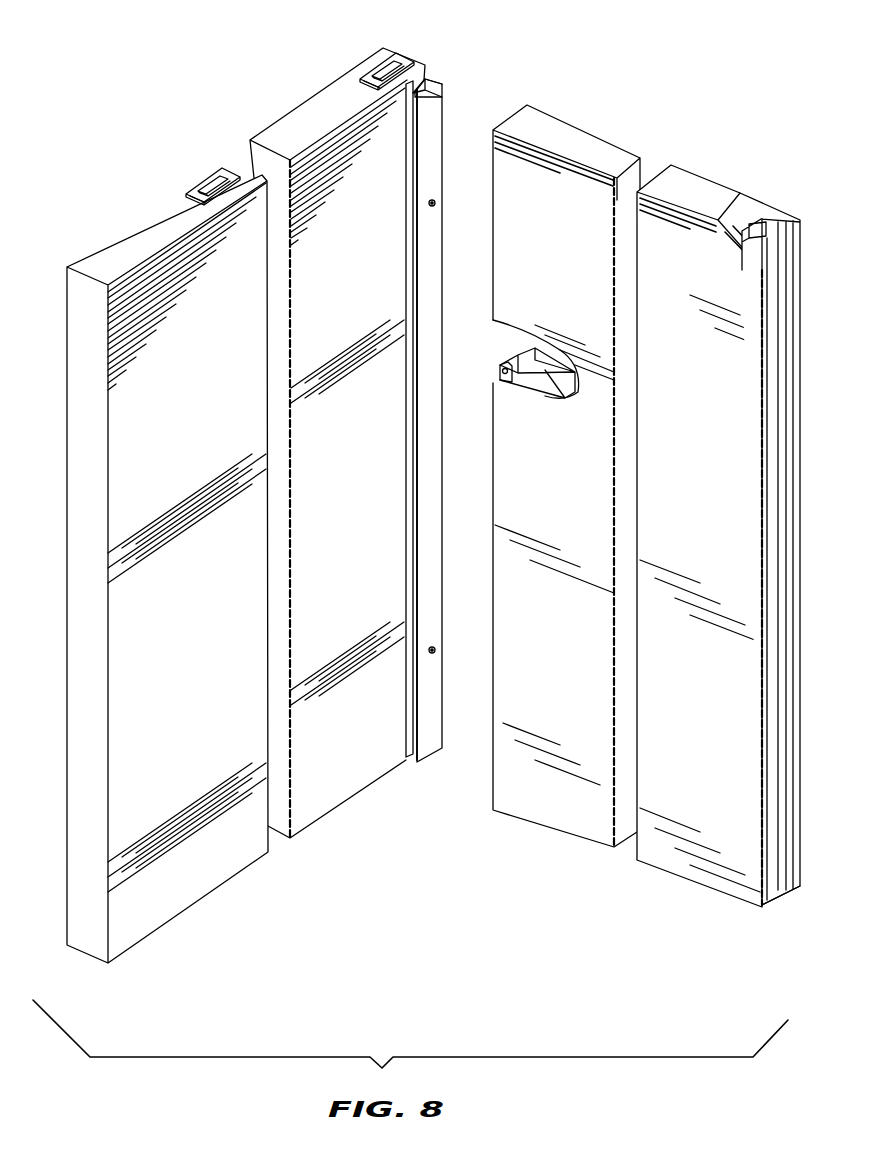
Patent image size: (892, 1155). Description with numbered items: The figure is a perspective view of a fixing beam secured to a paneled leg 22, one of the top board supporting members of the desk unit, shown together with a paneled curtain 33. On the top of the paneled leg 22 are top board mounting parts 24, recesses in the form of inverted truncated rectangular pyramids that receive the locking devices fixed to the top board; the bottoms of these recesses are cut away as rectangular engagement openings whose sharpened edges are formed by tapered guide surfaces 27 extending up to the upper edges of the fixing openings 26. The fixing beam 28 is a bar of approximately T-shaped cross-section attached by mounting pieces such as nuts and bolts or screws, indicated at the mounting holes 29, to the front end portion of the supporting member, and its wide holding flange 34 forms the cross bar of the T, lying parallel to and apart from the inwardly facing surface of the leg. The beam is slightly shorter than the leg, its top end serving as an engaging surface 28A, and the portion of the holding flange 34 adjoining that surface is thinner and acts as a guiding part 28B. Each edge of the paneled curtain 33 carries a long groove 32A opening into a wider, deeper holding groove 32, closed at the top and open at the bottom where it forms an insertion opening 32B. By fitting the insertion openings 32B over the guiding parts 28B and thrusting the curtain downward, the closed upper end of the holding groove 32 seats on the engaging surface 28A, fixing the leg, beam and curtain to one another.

The paneled leg 22 is at (122, 238).
The top board mounting part 24 is at (286, 109).
The fixing opening 26 is at (221, 181).
The tapered guide surface 27 is at (372, 61).
The fixing beam 28 is at (423, 430).
The engaging surface 28A is at (432, 84).
The guiding part 28B is at (412, 118).
The fastener hole 29 is at (435, 203).
The holding groove 32 is at (626, 565).
The long groove opening 32A is at (503, 370).
The insertion opening 32B is at (783, 905).
The paneled curtain 33 is at (687, 183).
The holding flange 34 is at (414, 255).